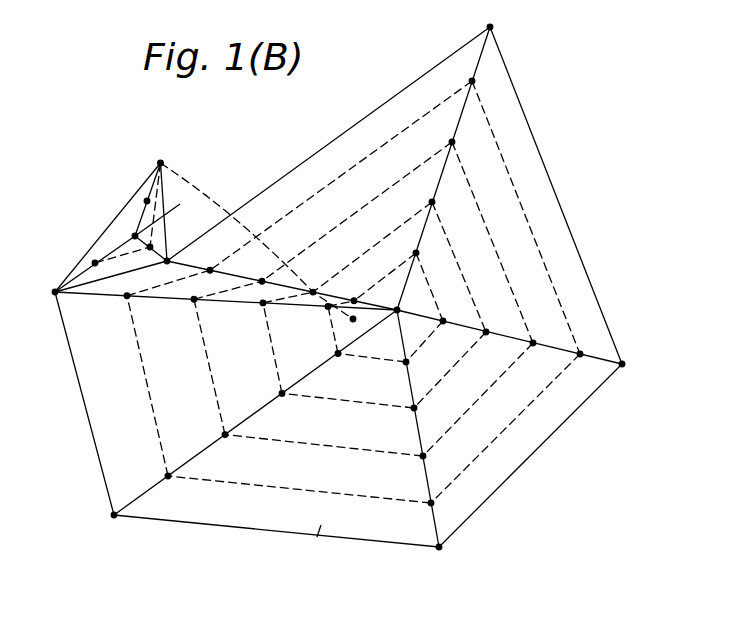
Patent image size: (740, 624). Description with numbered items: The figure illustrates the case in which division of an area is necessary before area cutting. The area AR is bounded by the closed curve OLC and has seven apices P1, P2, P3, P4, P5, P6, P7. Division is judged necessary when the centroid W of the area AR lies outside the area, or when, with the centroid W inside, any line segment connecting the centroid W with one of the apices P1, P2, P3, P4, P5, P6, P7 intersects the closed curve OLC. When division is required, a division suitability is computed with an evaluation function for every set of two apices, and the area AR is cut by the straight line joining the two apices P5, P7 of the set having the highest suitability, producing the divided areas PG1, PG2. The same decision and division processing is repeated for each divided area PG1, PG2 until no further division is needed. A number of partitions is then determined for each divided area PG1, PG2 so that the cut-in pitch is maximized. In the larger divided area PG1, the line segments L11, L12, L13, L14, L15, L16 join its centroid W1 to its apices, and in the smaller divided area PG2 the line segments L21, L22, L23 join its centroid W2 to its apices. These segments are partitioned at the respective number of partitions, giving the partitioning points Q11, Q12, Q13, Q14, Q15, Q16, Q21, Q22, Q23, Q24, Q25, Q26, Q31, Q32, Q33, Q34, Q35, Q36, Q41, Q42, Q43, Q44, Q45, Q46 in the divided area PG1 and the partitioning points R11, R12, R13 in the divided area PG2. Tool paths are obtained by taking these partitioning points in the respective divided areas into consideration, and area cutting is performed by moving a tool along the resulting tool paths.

The apex P1 is at (111, 530).
The apex P2 is at (444, 560).
The apex P3 is at (633, 372).
The apex P4 is at (501, 21).
The apex P5 is at (175, 247).
The apex P6 is at (171, 155).
The apex P7 is at (43, 295).
The centroid W1 is at (412, 304).
The centroid W2 is at (133, 234).
The centroid W is at (350, 329).
The divided area PG1 is at (368, 468).
The divided area PG2 is at (105, 252).
The area AR is at (566, 264).
The closed curve OLC is at (602, 306).
The line segment L11 is at (143, 496).
The line segment L12 is at (436, 523).
The line segment L13 is at (597, 362).
The line segment L14 is at (481, 58).
The line segment L15 is at (240, 276).
The line segment L16 is at (80, 296).
The line segment L21 is at (93, 277).
The line segment L22 is at (181, 204).
The line segment L23 is at (143, 184).
The partitioning point R11 is at (95, 265).
The partitioning point R12 is at (150, 249).
The partitioning point R13 is at (148, 200).
The partitioning point Q11 is at (346, 366).
The partitioning point Q12 is at (420, 368).
The partitioning point Q13 is at (456, 317).
The partitioning point Q14 is at (430, 253).
The partitioning point Q15 is at (348, 293).
The partitioning point Q16 is at (314, 319).
The partitioning point Q21 is at (286, 407).
The partitioning point Q22 is at (428, 413).
The partitioning point Q23 is at (499, 324).
The partitioning point Q24 is at (447, 204).
The partitioning point Q25 is at (315, 279).
The partitioning point Q26 is at (247, 316).
The partitioning point Q31 is at (231, 449).
The partitioning point Q32 is at (438, 462).
The partitioning point Q33 is at (547, 337).
The partitioning point Q34 is at (467, 143).
The partitioning point Q35 is at (263, 278).
The partitioning point Q36 is at (179, 313).
The partitioning point Q41 is at (172, 488).
The partitioning point Q42 is at (446, 508).
The partitioning point Q43 is at (594, 347).
The partitioning point Q44 is at (488, 83).
The partitioning point Q45 is at (208, 261).
The partitioning point Q46 is at (113, 307).